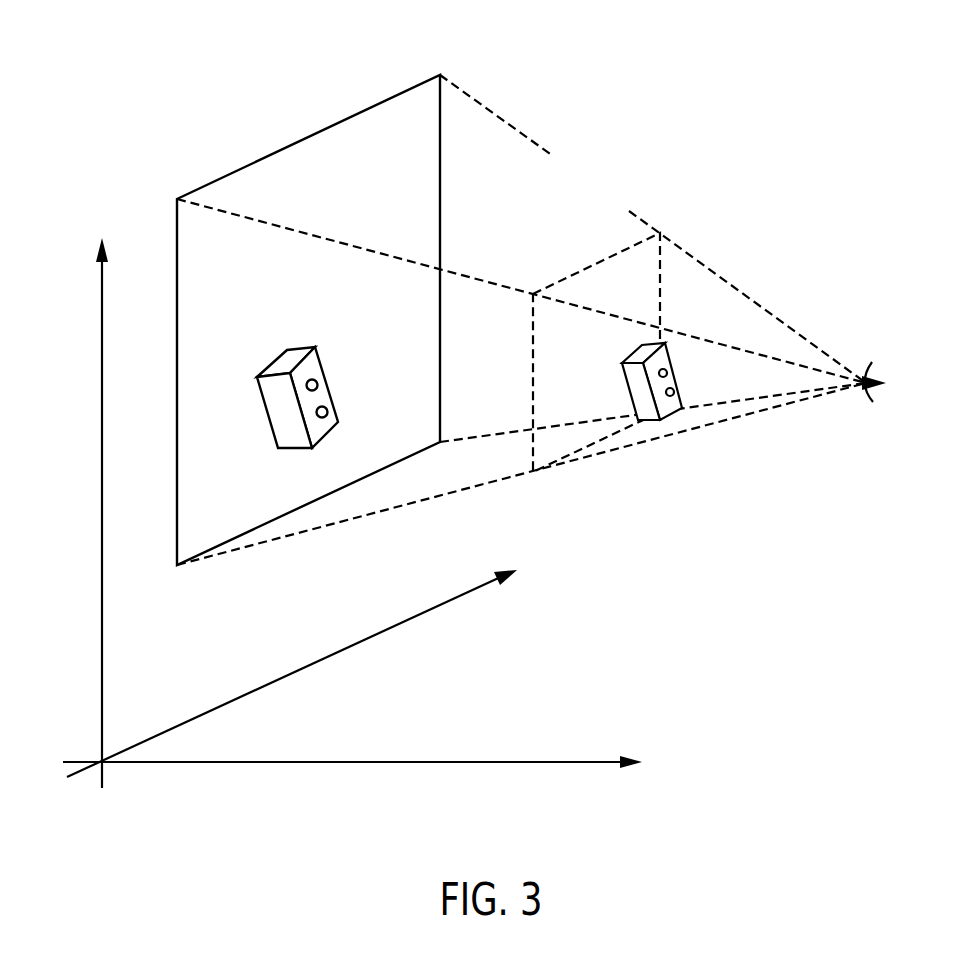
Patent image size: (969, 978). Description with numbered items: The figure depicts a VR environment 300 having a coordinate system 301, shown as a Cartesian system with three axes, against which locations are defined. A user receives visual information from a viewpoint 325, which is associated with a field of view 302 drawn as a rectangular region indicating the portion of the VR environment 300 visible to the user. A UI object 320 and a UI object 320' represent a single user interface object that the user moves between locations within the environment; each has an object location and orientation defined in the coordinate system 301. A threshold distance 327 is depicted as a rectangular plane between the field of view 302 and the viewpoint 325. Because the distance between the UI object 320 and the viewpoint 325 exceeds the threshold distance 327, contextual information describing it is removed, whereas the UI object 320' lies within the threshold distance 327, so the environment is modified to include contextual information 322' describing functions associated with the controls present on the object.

The VR environment 300 is at (138, 80).
The coordinate system 301 is at (148, 786).
The field of view 302 is at (298, 137).
The UI object 320 is at (266, 397).
The UI object 320' is at (680, 362).
The contextual information 322' is at (759, 392).
The viewpoint 325 is at (874, 374).
The threshold distance 327 is at (587, 270).